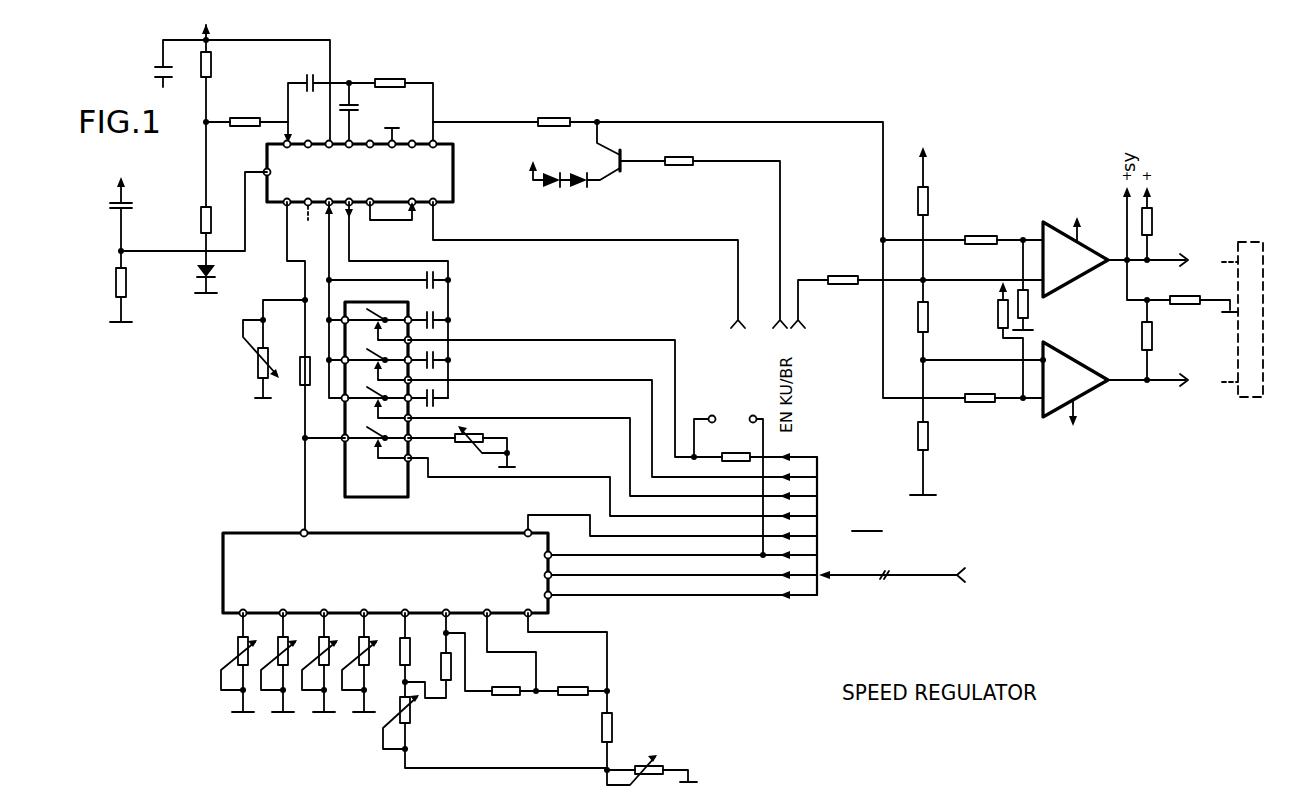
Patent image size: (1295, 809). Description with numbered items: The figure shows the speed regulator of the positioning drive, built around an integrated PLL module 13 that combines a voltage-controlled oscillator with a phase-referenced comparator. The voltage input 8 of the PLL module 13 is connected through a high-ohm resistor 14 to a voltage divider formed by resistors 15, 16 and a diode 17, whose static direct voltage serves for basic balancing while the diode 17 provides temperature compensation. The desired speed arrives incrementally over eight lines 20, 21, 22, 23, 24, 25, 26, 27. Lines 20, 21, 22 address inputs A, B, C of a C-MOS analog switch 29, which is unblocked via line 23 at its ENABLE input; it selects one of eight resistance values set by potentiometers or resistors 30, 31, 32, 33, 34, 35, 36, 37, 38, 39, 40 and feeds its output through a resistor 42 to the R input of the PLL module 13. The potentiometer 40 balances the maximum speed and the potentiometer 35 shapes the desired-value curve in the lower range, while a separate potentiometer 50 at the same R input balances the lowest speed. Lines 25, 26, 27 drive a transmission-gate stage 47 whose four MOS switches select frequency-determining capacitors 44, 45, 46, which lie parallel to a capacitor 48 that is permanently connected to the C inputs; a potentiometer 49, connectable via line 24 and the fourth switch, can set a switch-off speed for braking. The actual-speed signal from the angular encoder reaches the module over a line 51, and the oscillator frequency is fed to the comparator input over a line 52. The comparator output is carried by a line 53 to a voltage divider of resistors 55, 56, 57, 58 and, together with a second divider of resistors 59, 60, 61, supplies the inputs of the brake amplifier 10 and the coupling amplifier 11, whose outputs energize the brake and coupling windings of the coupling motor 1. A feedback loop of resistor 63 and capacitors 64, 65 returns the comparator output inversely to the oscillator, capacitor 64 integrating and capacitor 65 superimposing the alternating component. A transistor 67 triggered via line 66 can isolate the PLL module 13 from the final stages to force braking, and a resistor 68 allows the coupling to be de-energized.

The coupling motor 1 is at (1250, 319).
The voltage input 8 is at (993, 589).
The brake amplifier 10 is at (1080, 282).
The coupling amplifier 11 is at (1071, 373).
The PLL module 13 is at (438, 144).
The high-ohm resistor 14 is at (245, 118).
The resistor 15 is at (212, 64).
The resistor 16 is at (201, 221).
The diode 17 is at (197, 270).
The line 20 is at (782, 600).
The line 21 is at (800, 580).
The line 22 is at (795, 550).
The line 23 is at (795, 531).
The line 24 is at (795, 511).
The line 25 is at (795, 491).
The line 26 is at (795, 472).
The line 27 is at (786, 454).
The analog switch 29 is at (223, 568).
The potentiometer or resistor 30 is at (237, 652).
The potentiometer or resistor 31 is at (278, 650).
The potentiometer or resistor 32 is at (319, 650).
The potentiometer or resistor 33 is at (359, 650).
The potentiometer or resistor 34 is at (400, 650).
The potentiometer 35 is at (402, 712).
The potentiometer or resistor 36 is at (441, 668).
The potentiometer or resistor 37 is at (505, 697).
The potentiometer or resistor 38 is at (572, 697).
The potentiometer or resistor 39 is at (612, 728).
The potentiometer 40 is at (660, 760).
The resistor 42 is at (301, 386).
The frequency-determining capacitor 44 is at (431, 308).
The frequency-determining capacitor 45 is at (448, 353).
The frequency-determining capacitor 46 is at (446, 404).
The transmission-gate stage 47 is at (412, 496).
The capacitor 48 is at (448, 272).
The potentiometer 49 is at (472, 448).
The potentiometer 50 is at (258, 361).
The line 51 is at (614, 240).
The line 52 is at (393, 227).
The line 53 is at (838, 122).
The resistor 55 is at (1029, 315).
The resistor 56 is at (963, 226).
The resistor 57 is at (982, 403).
The resistor 58 is at (998, 317).
The resistor 59 is at (918, 440).
The resistor 60 is at (918, 327).
The resistor 61 is at (928, 200).
The resistor 63 is at (389, 97).
The capacitor 64 is at (360, 110).
The differential capacitor 65 is at (306, 76).
The line 66 is at (780, 215).
The transistor 67 is at (608, 180).
The resistor 68 is at (844, 276).